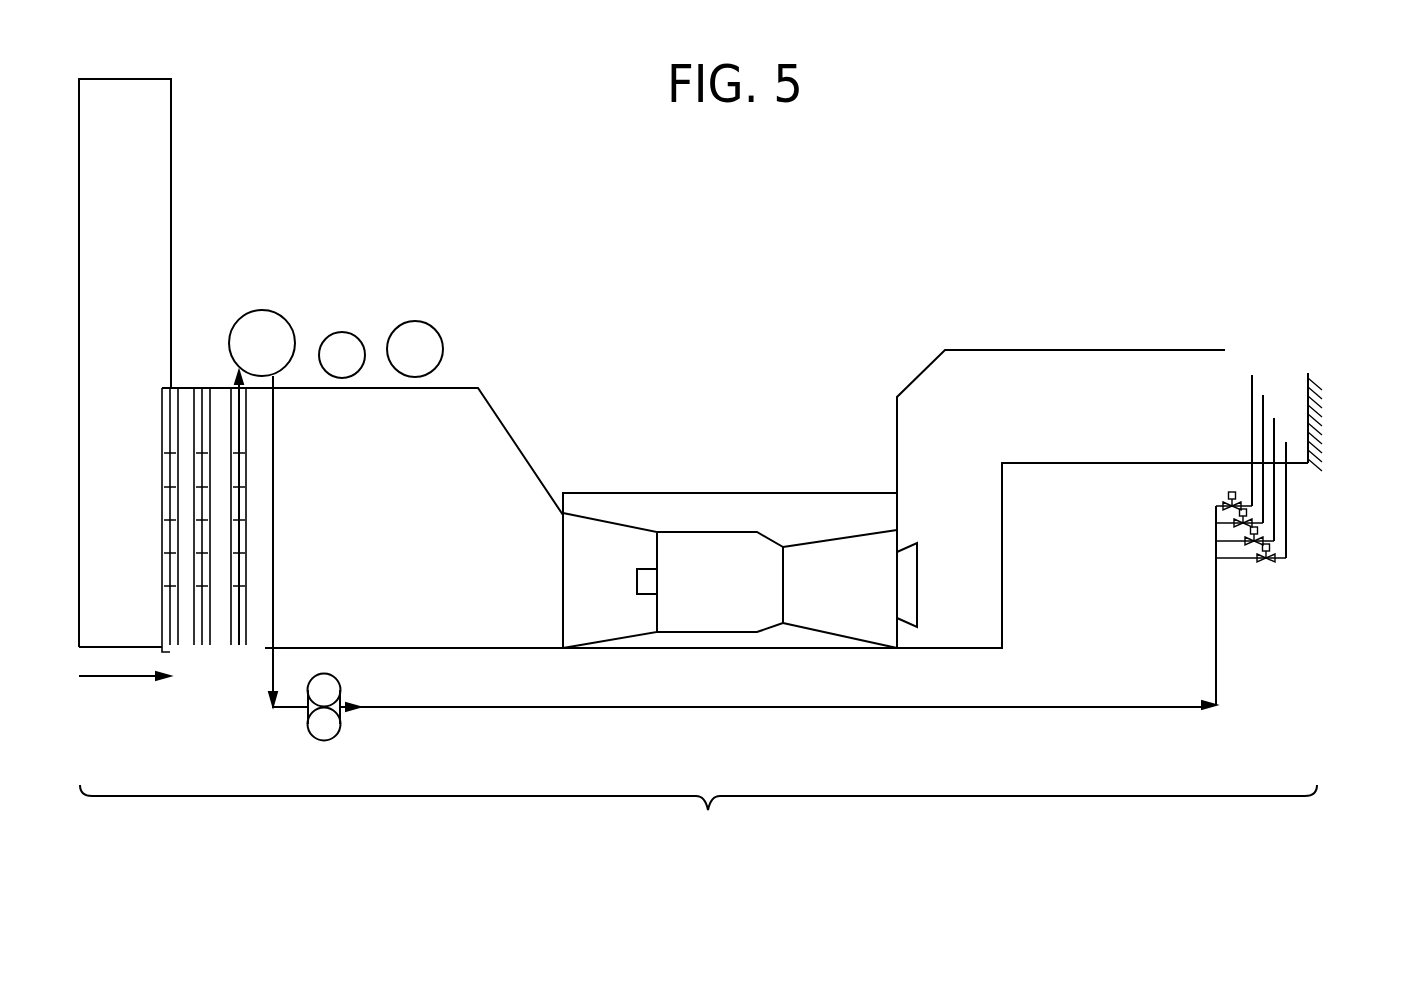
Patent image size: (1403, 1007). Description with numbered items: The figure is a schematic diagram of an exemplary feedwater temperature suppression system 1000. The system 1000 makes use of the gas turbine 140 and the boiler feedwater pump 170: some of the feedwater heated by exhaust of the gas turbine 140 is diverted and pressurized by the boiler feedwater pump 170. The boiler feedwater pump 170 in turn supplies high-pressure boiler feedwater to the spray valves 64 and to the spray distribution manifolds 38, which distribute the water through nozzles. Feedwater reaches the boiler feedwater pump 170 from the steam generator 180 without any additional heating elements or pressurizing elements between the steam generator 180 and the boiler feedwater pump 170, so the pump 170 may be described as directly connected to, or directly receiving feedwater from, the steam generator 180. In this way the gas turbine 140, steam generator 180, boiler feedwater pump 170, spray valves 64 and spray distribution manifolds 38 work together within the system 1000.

The spray distribution manifolds 38 is at (1313, 377).
The spray valves 64 is at (1266, 567).
The gas turbine 140 is at (742, 550).
The boiler feedwater pump 170 is at (340, 726).
The steam generator 180 is at (204, 650).
The feedwater temperature suppression system 1000 is at (698, 814).